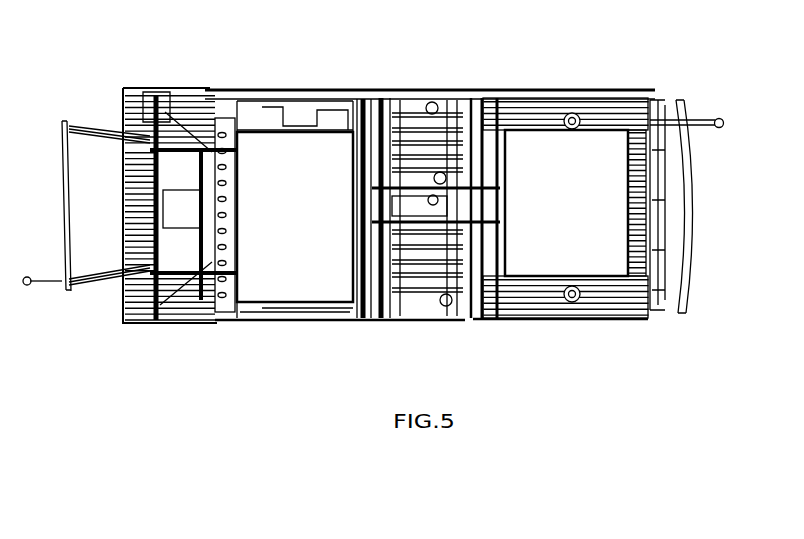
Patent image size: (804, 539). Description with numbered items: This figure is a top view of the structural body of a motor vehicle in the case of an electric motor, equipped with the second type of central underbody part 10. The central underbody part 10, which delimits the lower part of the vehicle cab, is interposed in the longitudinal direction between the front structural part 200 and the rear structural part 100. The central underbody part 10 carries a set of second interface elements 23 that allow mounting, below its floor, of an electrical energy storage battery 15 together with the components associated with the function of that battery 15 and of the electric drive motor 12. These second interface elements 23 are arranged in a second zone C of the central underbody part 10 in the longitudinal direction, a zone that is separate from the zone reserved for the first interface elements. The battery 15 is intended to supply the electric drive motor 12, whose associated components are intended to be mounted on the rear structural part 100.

The central underbody part 10 is at (334, 74).
The front structural part 200 is at (218, 74).
The rear structural part 100 is at (685, 80).
The second interface elements 23 is at (275, 158).
The electrical energy storage battery 15 is at (325, 163).
The electric drive motor 12 is at (593, 185).
The second zone C is at (353, 334).